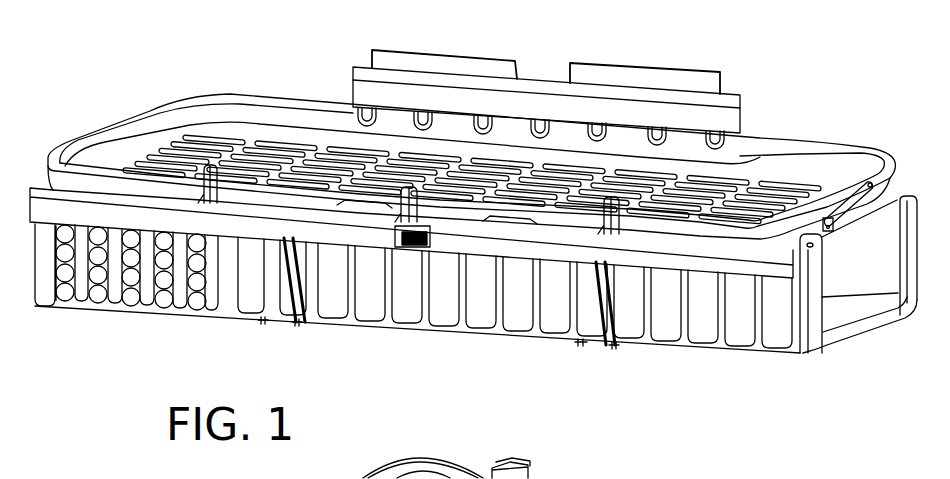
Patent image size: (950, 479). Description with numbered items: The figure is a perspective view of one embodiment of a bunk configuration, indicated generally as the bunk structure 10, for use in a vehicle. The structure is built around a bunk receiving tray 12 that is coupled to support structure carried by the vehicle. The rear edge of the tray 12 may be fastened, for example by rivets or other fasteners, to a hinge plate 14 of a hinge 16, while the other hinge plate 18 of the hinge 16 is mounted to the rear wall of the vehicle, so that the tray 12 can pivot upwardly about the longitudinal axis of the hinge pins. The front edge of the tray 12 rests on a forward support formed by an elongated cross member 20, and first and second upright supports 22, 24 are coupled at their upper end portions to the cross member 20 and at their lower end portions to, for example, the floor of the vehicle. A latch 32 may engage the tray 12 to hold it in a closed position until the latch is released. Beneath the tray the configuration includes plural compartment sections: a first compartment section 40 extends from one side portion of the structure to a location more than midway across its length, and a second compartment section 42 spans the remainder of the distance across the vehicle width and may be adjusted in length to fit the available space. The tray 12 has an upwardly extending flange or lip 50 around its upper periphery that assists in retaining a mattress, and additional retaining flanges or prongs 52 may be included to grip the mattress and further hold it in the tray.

The bunk structure 10 is at (473, 233).
The bunk receiving tray 12 is at (743, 175).
The hinge plate 14 is at (533, 105).
The hinge 16 is at (612, 92).
The other hinge plate 18 is at (455, 62).
The elongated cross member 20 is at (497, 247).
The first upright support 22 is at (590, 312).
The second upright support 24 is at (288, 292).
The latch 32 is at (411, 248).
The first compartment section 40 is at (665, 316).
The second compartment section 42 is at (121, 282).
The upwardly extending flange or lip 50 is at (818, 152).
The retaining flanges or prongs 52 is at (205, 184).